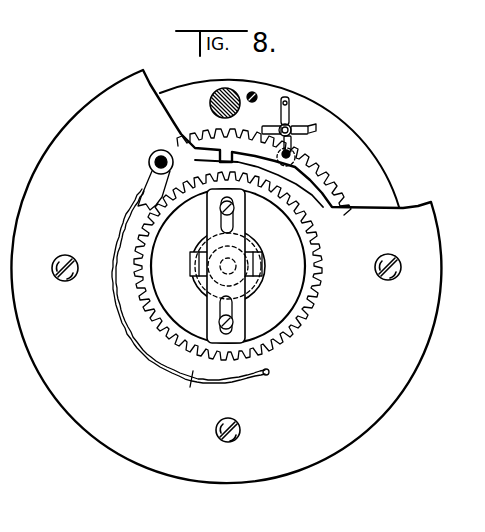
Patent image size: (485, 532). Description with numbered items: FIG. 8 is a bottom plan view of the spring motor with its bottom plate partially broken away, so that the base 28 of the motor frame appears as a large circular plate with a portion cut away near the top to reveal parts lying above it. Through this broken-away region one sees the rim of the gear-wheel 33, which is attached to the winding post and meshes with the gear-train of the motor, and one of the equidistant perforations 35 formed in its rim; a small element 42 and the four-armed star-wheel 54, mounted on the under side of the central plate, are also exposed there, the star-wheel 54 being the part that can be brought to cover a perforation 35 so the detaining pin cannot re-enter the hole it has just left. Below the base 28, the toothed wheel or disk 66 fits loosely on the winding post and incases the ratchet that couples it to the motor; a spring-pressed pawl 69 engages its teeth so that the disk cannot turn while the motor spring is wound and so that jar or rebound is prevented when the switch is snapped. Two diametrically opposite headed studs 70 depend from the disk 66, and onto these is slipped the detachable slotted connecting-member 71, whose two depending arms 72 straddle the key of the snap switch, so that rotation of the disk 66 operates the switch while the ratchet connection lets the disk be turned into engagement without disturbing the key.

The base 28 is at (121, 434).
The gear-wheel 33 is at (312, 173).
The perforations 35 is at (305, 150).
The screw 42 is at (257, 92).
The star-wheel 54 is at (313, 123).
The toothed wheel or disk 66 is at (304, 250).
The spring-pressed pawl 69 is at (147, 183).
The headed studs 70 is at (233, 211).
The connecting-member 71 is at (218, 240).
The depending arms 72 is at (193, 263).